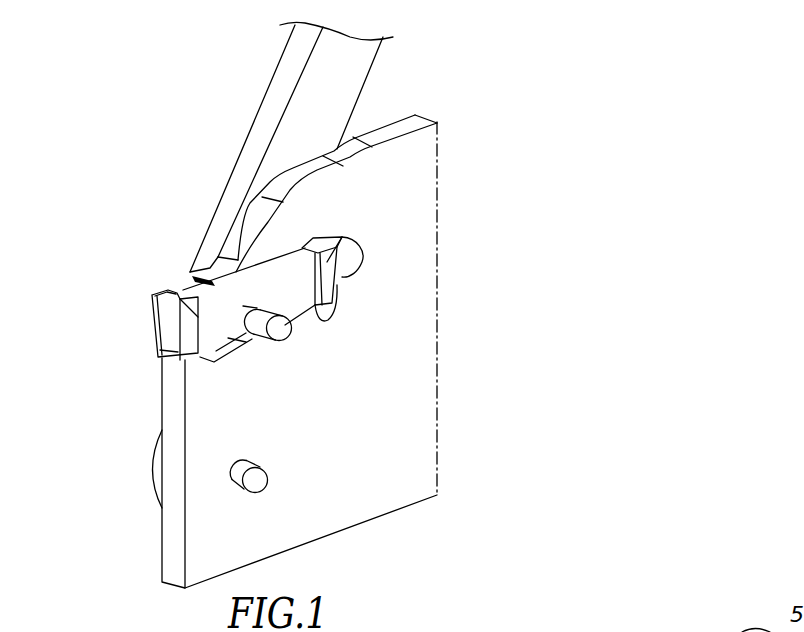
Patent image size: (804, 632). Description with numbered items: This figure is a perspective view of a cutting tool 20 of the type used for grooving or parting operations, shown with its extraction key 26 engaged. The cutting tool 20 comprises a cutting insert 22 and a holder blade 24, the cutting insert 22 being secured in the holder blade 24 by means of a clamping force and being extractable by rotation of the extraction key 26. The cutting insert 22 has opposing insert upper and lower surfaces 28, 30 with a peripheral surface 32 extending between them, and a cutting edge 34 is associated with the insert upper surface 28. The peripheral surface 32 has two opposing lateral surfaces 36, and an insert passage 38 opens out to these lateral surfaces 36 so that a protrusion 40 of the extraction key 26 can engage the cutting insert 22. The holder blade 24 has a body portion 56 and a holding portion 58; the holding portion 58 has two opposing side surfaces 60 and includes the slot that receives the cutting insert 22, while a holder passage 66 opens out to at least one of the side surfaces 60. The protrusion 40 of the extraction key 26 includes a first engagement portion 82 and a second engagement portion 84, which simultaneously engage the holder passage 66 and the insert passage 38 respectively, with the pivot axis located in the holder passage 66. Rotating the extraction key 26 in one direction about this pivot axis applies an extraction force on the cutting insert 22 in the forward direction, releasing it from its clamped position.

The cutting tool 20 is at (107, 188).
The cutting insert 22 is at (152, 319).
The holder blade 24 is at (537, 200).
The extraction key 26 is at (385, 100).
The insert upper surface 28 is at (195, 230).
The insert lower surface 30 is at (285, 363).
The peripheral surface 32 is at (223, 313).
The cutting edge 34 is at (158, 292).
The lateral surfaces 36 is at (187, 357).
The insert passage 38 is at (230, 368).
The protrusion 40 is at (291, 343).
The body portion 56 is at (405, 426).
The holding portion 58 is at (408, 158).
The side surfaces 60 is at (322, 518).
The holder passage 66 is at (215, 482).
The first engagement portion 82 is at (253, 486).
The second engagement portion 84 is at (283, 332).